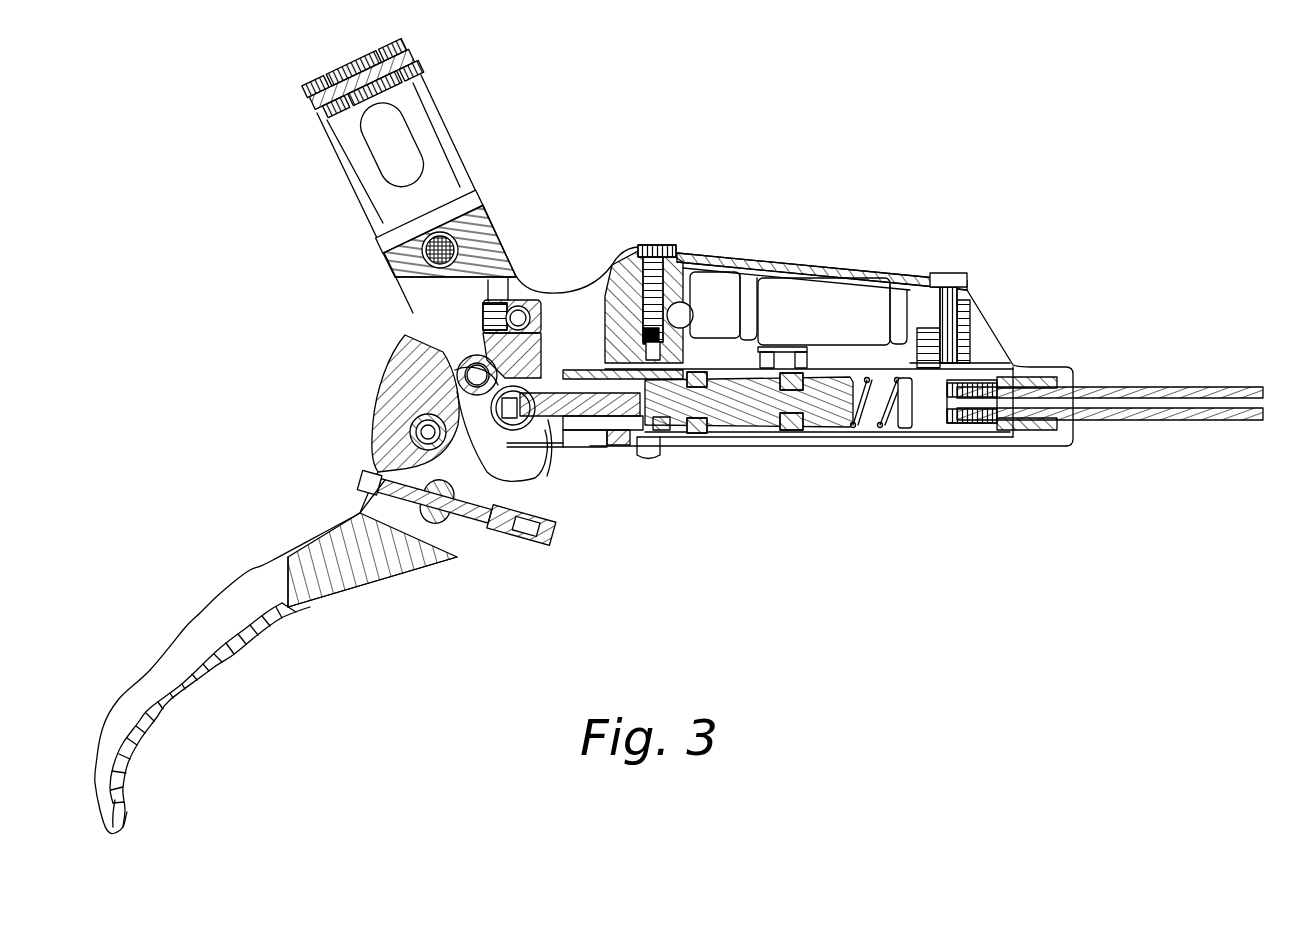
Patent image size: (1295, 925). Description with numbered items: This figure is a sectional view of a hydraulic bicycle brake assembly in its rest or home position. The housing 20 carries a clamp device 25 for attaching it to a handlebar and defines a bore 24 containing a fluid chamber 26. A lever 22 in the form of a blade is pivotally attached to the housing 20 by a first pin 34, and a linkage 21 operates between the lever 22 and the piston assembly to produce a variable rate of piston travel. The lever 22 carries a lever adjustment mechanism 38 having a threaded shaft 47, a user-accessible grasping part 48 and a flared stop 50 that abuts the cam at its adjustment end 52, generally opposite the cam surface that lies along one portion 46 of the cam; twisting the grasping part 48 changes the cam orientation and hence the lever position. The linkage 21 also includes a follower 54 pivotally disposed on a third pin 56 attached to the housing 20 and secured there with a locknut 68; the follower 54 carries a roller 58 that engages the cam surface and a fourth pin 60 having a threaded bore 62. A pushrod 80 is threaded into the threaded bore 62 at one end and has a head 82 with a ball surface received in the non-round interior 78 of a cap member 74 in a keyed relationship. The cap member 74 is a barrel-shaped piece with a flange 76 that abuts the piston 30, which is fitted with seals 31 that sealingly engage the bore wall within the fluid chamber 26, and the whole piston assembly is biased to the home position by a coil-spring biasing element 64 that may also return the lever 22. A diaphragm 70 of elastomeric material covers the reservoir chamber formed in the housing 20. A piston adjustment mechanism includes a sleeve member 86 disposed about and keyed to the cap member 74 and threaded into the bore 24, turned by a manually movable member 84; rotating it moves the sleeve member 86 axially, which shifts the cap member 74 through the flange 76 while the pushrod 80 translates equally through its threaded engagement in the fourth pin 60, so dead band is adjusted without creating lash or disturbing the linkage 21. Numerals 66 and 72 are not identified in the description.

The housing 20 is at (918, 450).
The linkage 21 is at (408, 312).
The lever 22 is at (350, 590).
The bore 24 is at (835, 385).
The clamp device 25 is at (420, 68).
The fluid chamber 26 is at (935, 432).
The piston 30 is at (830, 432).
The seal 31 is at (695, 434).
The first pin 34 is at (400, 432).
The lever adjustment mechanism 38 is at (475, 540).
The portion of the cam 46 is at (438, 340).
The threaded shaft 47 is at (505, 470).
The grasping part 48 is at (540, 540).
The stop 50 is at (408, 545).
The adjustment end of the cam 52 is at (362, 493).
The follower 54 is at (541, 358).
The third pin 56 is at (523, 300).
The roller 58 is at (458, 370).
The fourth pin 60 is at (545, 470).
The threaded bore 62 is at (540, 380).
The piston assembly biasing element 64 is at (870, 432).
The bolt bore 66 is at (555, 300).
The locknut 68 is at (478, 297).
The diaphragm 70 is at (740, 262).
The reservoir lid 72 is at (848, 265).
The cap member 74 is at (640, 450).
The flange 76 is at (675, 447).
The non-round interior 78 is at (600, 447).
The pushrod 80 is at (595, 393).
The head 82 is at (700, 370).
The manually movable member 84 is at (665, 445).
The sleeve member 86 is at (612, 452).